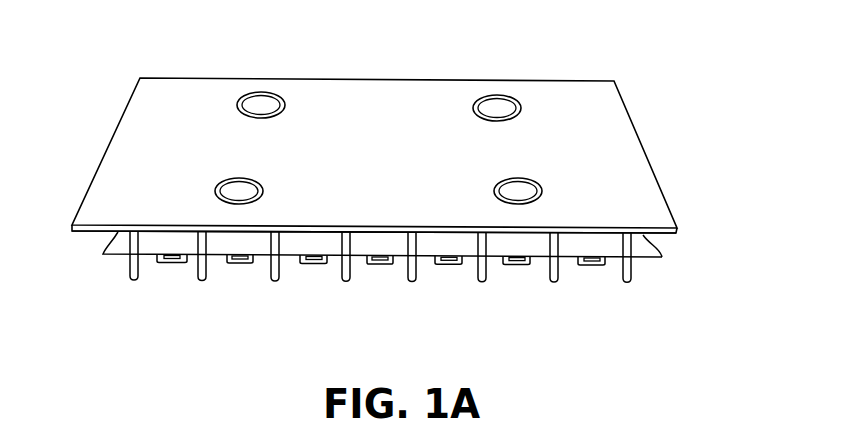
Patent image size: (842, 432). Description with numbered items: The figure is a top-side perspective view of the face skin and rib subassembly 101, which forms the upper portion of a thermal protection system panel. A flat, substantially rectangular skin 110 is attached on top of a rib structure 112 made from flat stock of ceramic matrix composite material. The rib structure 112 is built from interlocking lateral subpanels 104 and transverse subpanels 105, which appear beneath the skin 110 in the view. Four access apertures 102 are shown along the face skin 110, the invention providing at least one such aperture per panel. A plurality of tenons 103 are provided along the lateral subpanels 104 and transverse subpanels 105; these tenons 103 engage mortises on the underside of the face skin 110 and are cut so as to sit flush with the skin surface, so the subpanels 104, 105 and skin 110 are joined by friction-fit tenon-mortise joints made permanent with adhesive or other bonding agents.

The face skin and rib subassembly 101 is at (243, 37).
The access apertures 102 is at (261, 103).
The tenons 103 is at (377, 266).
The lateral subpanels 104 is at (115, 255).
The transverse subpanels 105 is at (199, 281).
The face skin 110 is at (182, 130).
The rib structure 112 is at (683, 263).